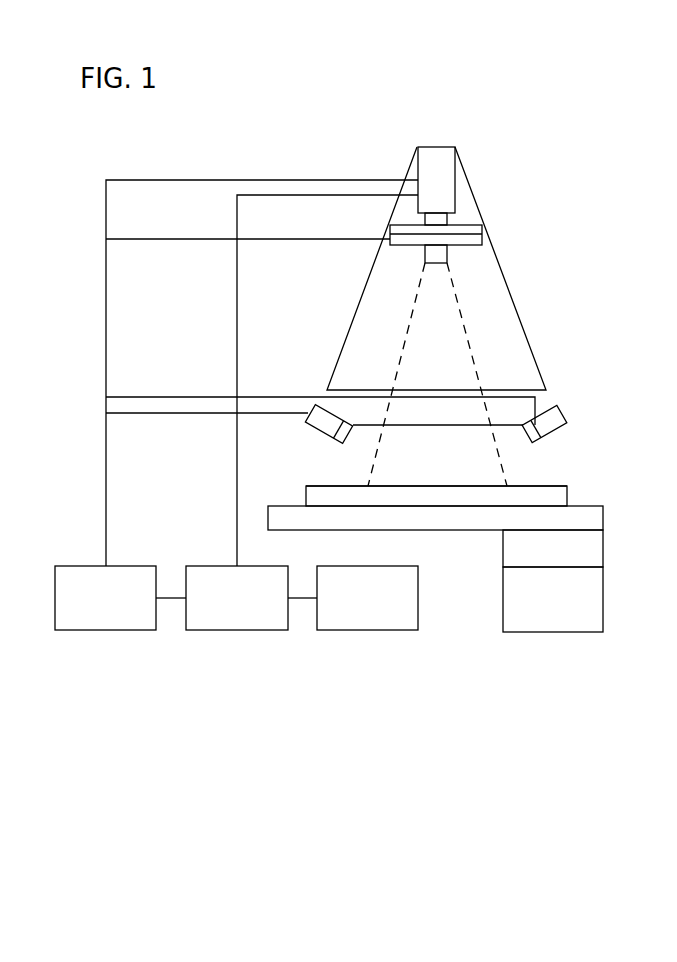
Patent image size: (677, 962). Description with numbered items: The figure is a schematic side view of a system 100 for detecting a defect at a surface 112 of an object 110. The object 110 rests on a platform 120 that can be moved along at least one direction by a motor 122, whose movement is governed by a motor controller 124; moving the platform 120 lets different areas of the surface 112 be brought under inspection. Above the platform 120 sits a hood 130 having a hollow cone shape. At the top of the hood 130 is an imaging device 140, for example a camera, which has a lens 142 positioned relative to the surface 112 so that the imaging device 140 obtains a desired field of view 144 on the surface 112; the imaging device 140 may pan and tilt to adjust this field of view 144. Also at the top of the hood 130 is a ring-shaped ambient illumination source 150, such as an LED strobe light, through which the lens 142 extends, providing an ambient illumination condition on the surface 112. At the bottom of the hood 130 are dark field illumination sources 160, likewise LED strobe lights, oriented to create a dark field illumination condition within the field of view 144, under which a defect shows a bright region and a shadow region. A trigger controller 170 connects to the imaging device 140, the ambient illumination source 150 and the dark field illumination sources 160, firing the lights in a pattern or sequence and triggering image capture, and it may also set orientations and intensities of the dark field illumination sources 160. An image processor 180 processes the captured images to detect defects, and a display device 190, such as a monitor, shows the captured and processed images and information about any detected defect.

The system 100 is at (376, 102).
The object 110 is at (567, 496).
The surface 112 is at (535, 486).
The platform 120 is at (603, 518).
The motor 122 is at (590, 554).
The motor controller 124 is at (590, 596).
The hood 130 is at (517, 313).
The imaging device 140 is at (456, 190).
The lens 142 is at (449, 257).
The field of view 144 is at (478, 368).
The ambient illumination source 150 is at (473, 240).
The dark field illumination source 160 is at (559, 408).
The trigger controller 170 is at (106, 630).
The image processor 180 is at (237, 630).
The display device 190 is at (368, 630).